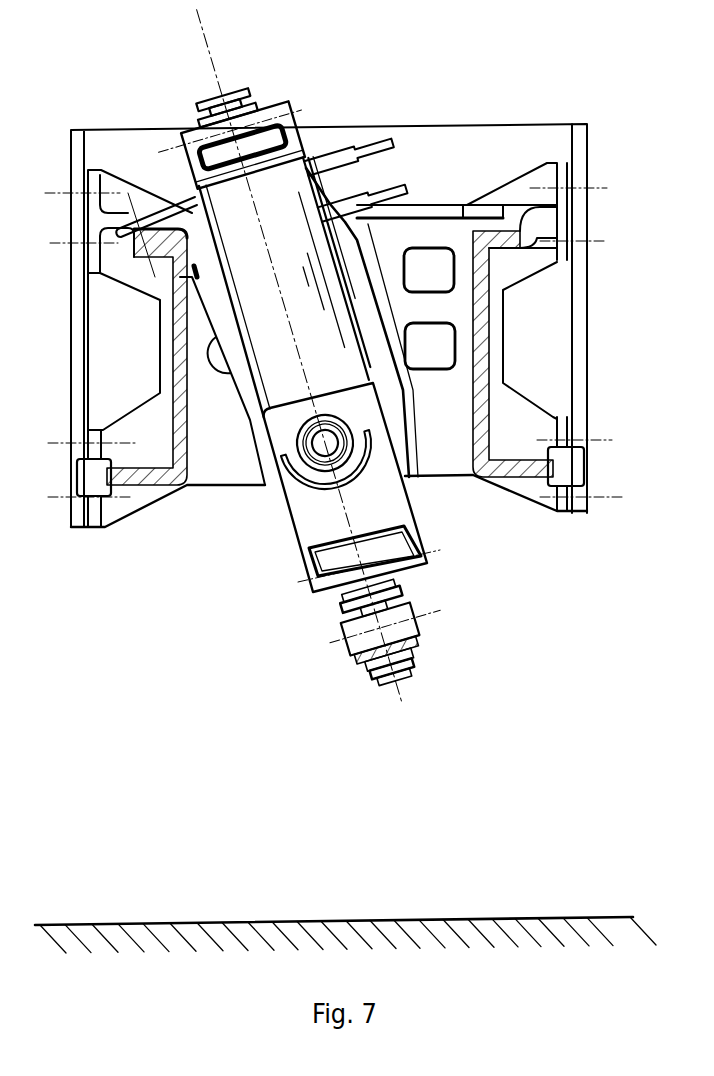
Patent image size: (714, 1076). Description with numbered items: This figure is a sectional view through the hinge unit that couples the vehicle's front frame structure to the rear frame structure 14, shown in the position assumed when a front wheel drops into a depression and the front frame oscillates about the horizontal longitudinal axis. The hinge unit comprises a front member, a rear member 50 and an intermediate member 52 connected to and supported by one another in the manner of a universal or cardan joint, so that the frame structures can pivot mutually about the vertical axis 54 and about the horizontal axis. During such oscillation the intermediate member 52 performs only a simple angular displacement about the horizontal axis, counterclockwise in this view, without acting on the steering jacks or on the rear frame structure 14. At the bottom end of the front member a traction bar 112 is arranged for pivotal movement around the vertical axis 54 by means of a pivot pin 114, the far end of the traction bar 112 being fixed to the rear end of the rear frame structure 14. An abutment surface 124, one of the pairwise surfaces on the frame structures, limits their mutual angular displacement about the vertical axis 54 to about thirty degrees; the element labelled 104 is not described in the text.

The rear frame structure 14 is at (466, 133).
The rear member 50 is at (137, 425).
The intermediate member 52 is at (310, 527).
The vertical axis 54 is at (204, 36).
The tool body 104 is at (347, 210).
The traction bar 112 is at (413, 613).
The pivot pin 114 is at (405, 688).
The abutment surface 124 is at (448, 212).